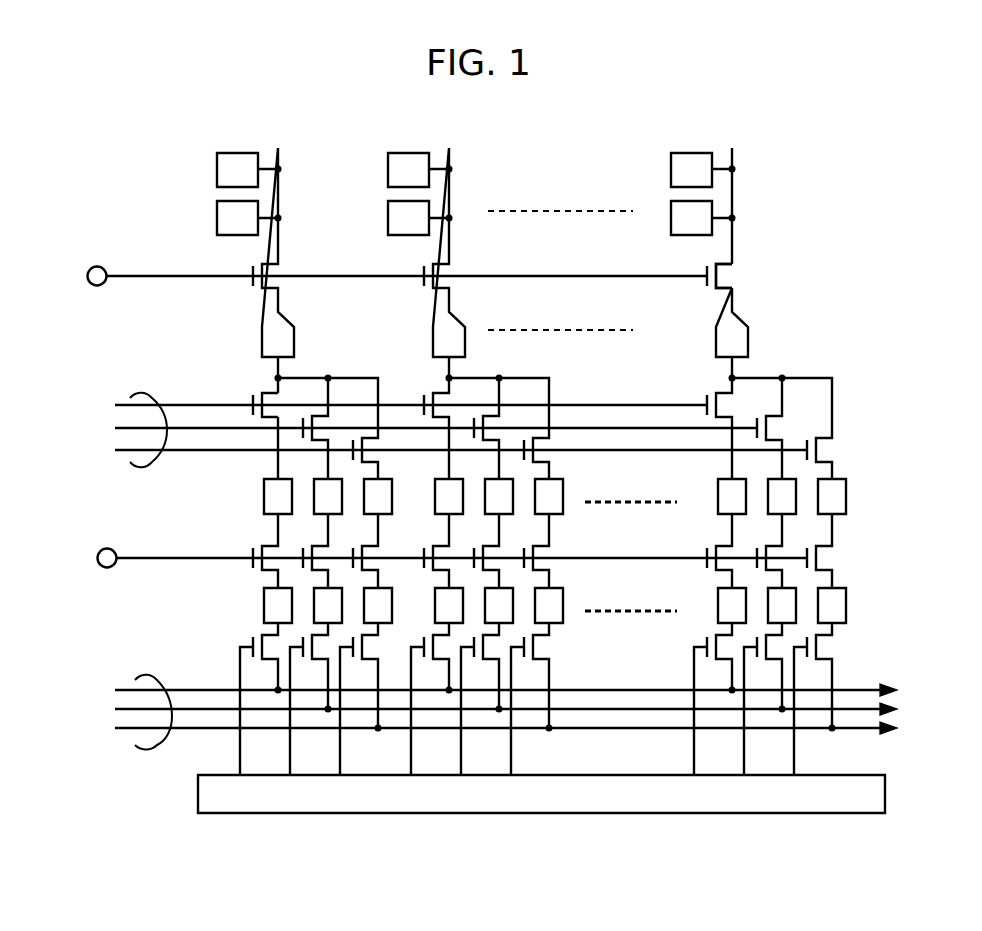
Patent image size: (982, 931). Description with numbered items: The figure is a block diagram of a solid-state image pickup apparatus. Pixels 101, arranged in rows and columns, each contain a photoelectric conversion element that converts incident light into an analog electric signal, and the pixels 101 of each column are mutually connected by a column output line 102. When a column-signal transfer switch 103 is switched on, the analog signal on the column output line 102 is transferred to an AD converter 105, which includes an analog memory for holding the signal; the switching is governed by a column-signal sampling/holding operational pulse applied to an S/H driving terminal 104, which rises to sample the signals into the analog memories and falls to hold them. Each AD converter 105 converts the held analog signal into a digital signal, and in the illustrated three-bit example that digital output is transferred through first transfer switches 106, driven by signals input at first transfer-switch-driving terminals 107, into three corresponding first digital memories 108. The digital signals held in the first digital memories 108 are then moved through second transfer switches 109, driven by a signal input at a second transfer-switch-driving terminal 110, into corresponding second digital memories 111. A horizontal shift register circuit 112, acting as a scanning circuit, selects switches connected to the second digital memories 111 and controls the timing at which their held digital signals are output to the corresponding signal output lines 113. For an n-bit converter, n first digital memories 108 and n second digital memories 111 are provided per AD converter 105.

The pixel 101 is at (695, 152).
The column output line 102 is at (733, 197).
The column-signal transfer switch 103 is at (726, 278).
The S/H driving terminal 104 is at (95, 266).
The AD converter 105 is at (750, 335).
The first transfer switch 106 is at (250, 393).
The first transfer-switch-driving terminal 107 is at (139, 393).
The first digital memory 108 is at (848, 496).
The second transfer switch 109 is at (250, 546).
The second transfer-switch-driving terminal 110 is at (106, 549).
The second digital memory 111 is at (848, 606).
The horizontal shift register circuit 112 is at (198, 790).
The signal output line 113 is at (139, 678).